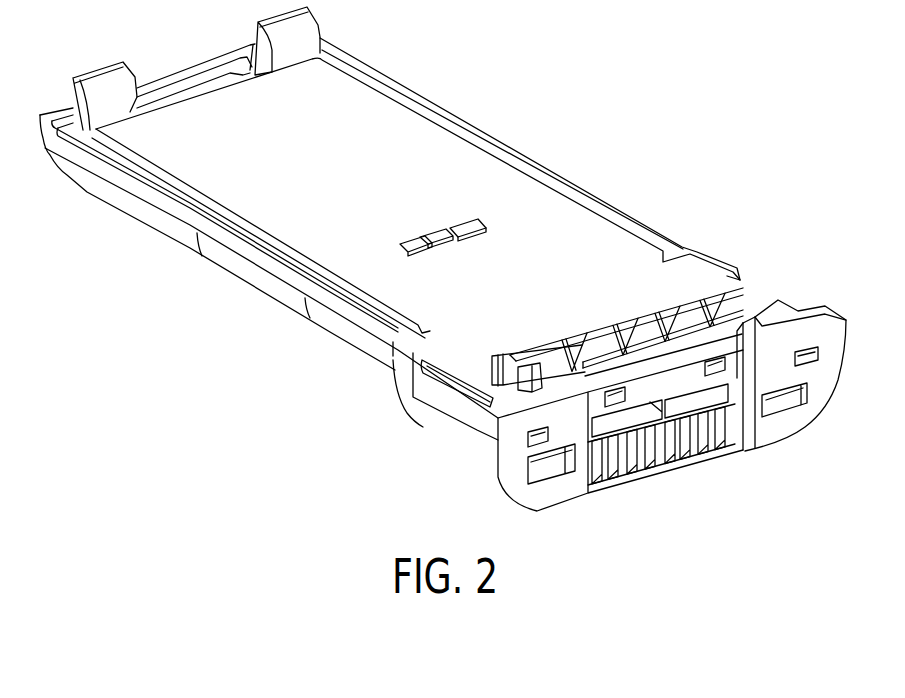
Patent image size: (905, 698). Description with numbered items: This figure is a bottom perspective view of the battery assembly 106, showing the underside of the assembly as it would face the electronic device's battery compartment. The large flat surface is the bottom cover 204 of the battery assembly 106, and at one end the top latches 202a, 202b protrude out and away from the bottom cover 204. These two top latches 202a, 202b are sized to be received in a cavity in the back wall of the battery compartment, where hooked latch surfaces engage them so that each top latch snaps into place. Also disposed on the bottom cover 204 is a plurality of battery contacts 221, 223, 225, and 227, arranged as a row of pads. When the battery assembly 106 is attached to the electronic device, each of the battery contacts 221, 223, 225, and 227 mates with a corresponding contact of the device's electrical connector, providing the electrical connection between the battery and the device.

The battery assembly 106 is at (402, 70).
The bottom cover 204 is at (593, 246).
The battery contact 221 is at (483, 239).
The battery contact 223 is at (453, 245).
The battery contact 225 is at (443, 252).
The battery contact 227 is at (430, 258).
The top latch 202a is at (777, 294).
The top latch 202b is at (510, 369).